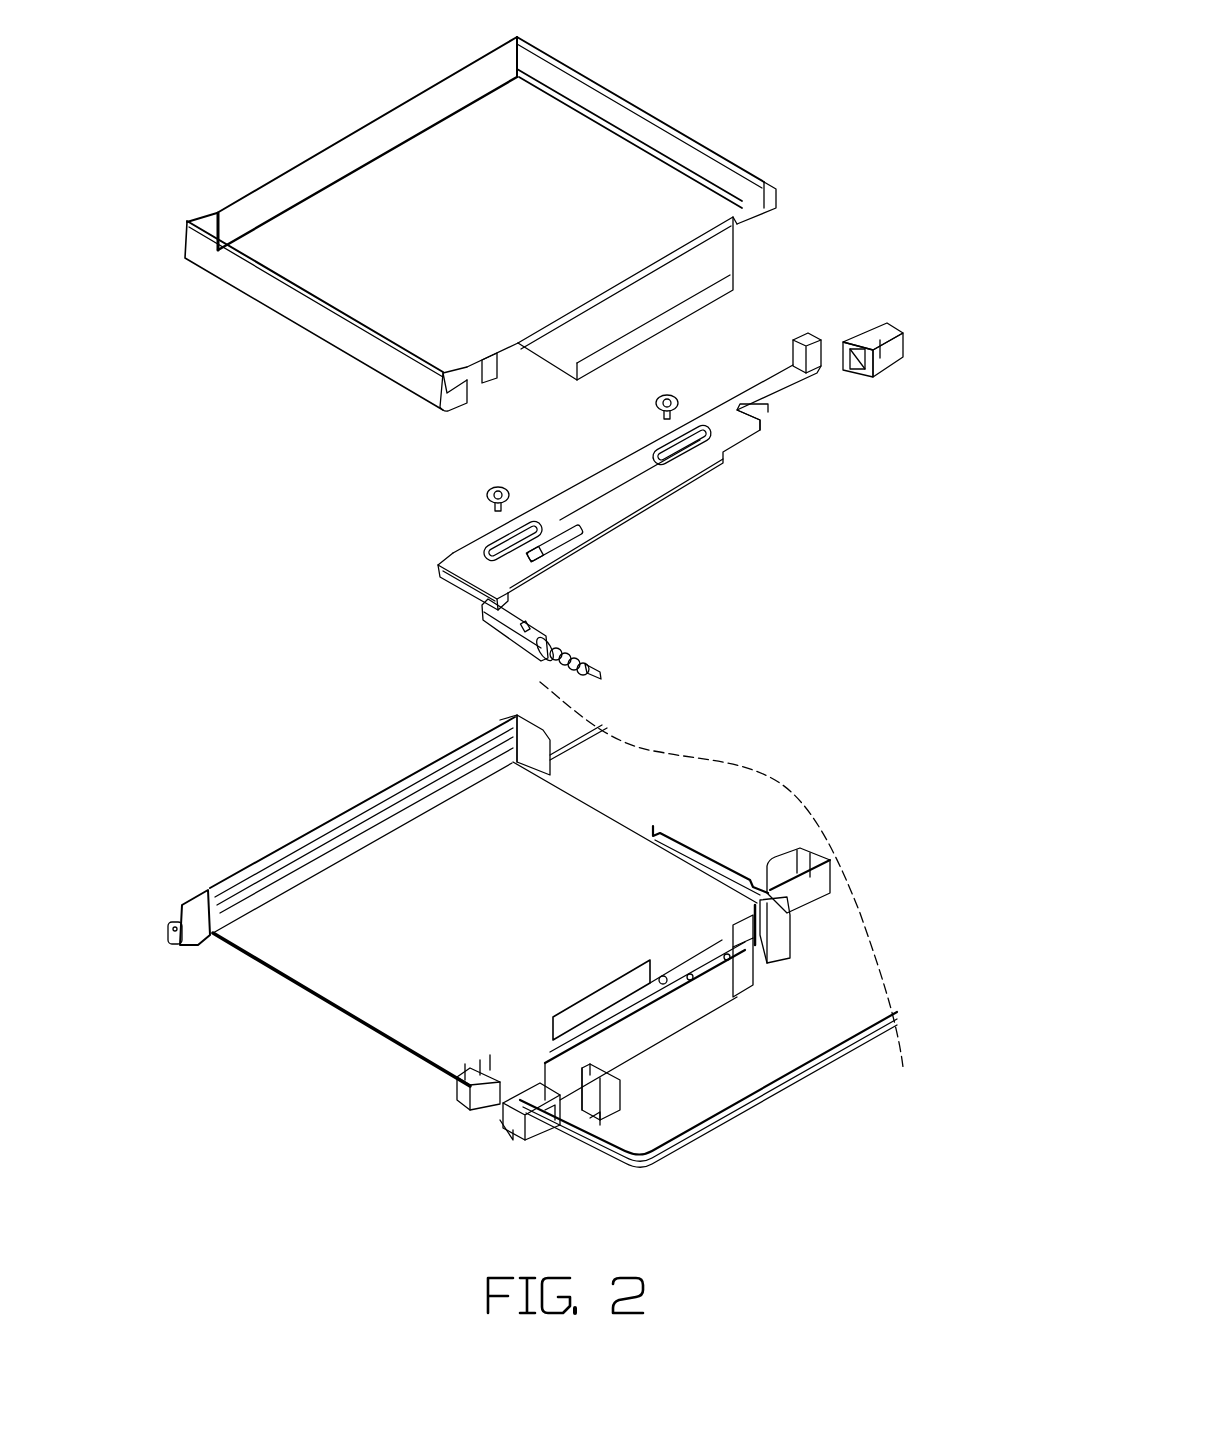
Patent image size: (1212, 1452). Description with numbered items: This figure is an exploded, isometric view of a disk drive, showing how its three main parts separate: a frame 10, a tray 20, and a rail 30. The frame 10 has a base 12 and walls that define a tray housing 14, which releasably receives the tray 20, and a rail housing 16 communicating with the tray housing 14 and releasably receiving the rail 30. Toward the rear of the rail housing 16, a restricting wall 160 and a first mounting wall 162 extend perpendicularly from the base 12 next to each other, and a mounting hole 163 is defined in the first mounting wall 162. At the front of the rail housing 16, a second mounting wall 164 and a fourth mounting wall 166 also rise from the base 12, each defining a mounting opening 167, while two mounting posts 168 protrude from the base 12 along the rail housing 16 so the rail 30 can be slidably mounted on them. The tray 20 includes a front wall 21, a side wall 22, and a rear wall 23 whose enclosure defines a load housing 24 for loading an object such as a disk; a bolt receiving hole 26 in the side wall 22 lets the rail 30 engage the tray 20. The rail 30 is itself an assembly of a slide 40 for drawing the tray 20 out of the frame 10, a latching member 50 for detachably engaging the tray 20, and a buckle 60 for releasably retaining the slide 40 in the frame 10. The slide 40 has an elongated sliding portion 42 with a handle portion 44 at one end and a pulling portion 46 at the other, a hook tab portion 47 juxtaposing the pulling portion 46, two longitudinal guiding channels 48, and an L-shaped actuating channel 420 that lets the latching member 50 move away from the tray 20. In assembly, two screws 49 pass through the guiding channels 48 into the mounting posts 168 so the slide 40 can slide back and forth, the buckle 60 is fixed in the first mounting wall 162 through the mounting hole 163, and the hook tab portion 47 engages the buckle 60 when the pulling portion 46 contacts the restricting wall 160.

The frame 10 is at (807, 779).
The base 12 is at (773, 1063).
The tray housing 14 is at (318, 967).
The rail housing 16 is at (600, 1018).
The tray 20 is at (657, 78).
The front wall 21 is at (222, 255).
The side wall 22 is at (475, 383).
The rear wall 23 is at (700, 140).
The load housing 24 is at (330, 272).
The bolt receiving hole 26 is at (490, 384).
The rail 30 is at (992, 432).
The slide 40 is at (716, 491).
The sliding portion 42 is at (623, 502).
The handle portion 44 is at (452, 558).
The pulling portion 46 is at (796, 334).
The hook tab portion 47 is at (772, 411).
The guiding channels 48 is at (506, 549).
The screws 49 is at (668, 393).
The latching member 50 is at (576, 631).
The buckle 60 is at (901, 368).
The restricting wall 160 is at (812, 847).
The first mounting wall 162 is at (783, 897).
The mounting hole 163 is at (770, 913).
The second mounting wall 164 is at (530, 1107).
The fourth mounting wall 166 is at (577, 1130).
The mounting opening 167 is at (548, 1115).
The mounting posts 168 is at (493, 1100).
The actuating channel 420 is at (562, 543).